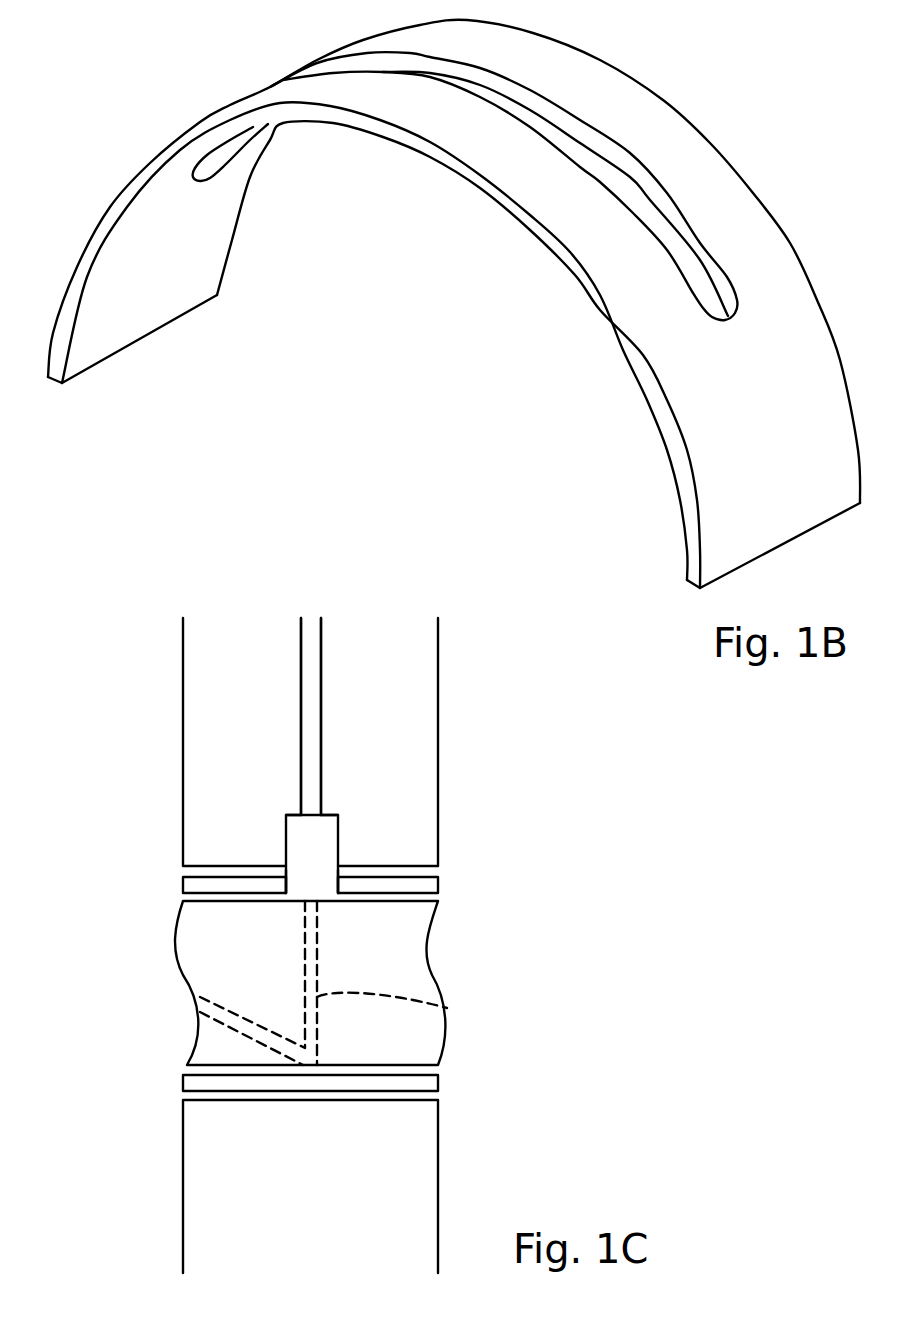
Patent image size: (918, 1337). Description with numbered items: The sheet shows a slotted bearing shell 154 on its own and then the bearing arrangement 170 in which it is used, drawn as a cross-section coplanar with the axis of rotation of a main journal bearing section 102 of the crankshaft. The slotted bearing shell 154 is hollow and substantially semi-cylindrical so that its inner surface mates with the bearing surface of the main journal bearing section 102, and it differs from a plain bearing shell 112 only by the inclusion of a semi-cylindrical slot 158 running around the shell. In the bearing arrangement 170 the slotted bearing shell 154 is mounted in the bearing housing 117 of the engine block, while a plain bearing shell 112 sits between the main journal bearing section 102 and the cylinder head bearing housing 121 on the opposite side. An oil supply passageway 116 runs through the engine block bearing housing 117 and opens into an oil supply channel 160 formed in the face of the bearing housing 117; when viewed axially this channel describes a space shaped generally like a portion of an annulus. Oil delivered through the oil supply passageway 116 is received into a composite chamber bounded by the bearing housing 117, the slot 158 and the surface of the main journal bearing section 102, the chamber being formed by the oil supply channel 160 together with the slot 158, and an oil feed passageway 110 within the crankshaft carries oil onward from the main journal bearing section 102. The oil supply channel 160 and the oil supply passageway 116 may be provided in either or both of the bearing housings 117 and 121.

In FIG. 1B, the slotted bearing shell 154 is at (454, 304).
In FIG. 1C, the slotted bearing shell 154 is at (433, 885).
In FIG. 1B, the slot 158 is at (650, 217).
In FIG. 1C, the slot 158 is at (302, 883).
In FIG. 1C, the bearing arrangement 170 is at (293, 907).
In FIG. 1C, the bearing housing 117 is at (200, 713).
In FIG. 1C, the oil supply passageway 116 is at (310, 727).
In FIG. 1C, the oil supply channel 160 is at (322, 843).
In FIG. 1C, the main journal bearing section 102 is at (407, 953).
In FIG. 1C, the oil feed passageway 110 is at (447, 1008).
In FIG. 1C, the plain bearing shell 112 is at (435, 1083).
In FIG. 1C, the cylinder head bearing housing 121 is at (407, 1165).